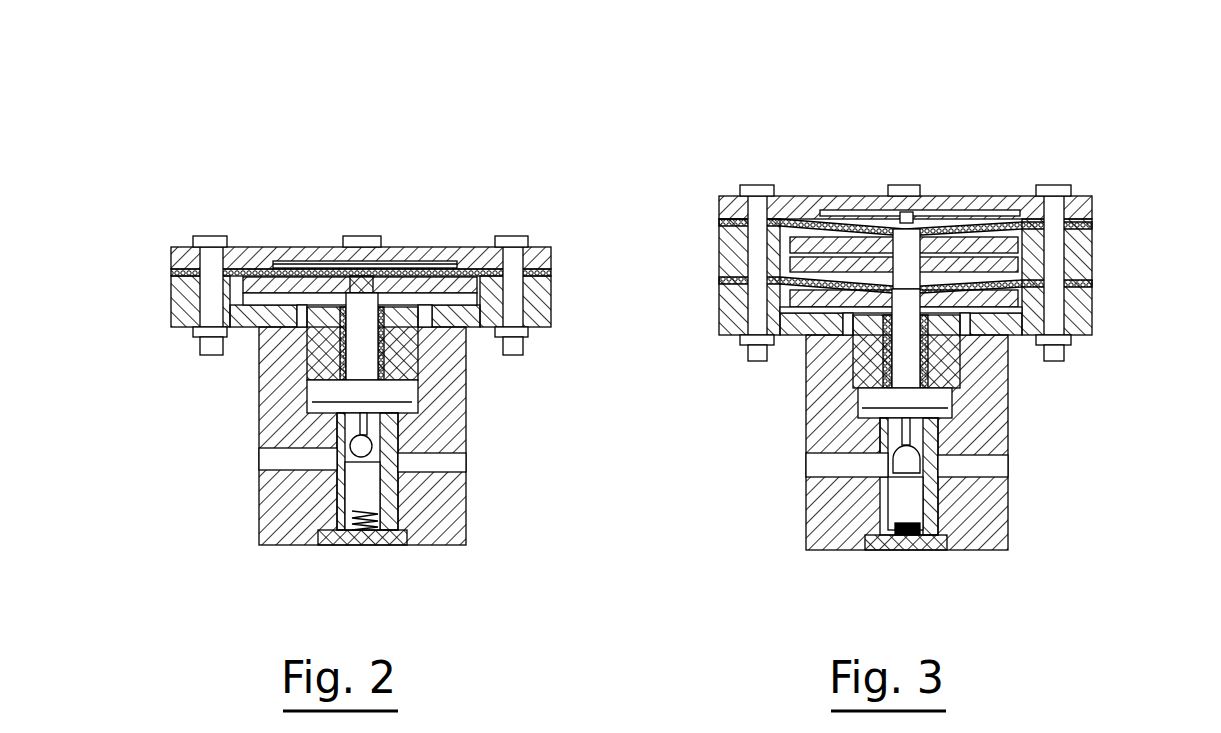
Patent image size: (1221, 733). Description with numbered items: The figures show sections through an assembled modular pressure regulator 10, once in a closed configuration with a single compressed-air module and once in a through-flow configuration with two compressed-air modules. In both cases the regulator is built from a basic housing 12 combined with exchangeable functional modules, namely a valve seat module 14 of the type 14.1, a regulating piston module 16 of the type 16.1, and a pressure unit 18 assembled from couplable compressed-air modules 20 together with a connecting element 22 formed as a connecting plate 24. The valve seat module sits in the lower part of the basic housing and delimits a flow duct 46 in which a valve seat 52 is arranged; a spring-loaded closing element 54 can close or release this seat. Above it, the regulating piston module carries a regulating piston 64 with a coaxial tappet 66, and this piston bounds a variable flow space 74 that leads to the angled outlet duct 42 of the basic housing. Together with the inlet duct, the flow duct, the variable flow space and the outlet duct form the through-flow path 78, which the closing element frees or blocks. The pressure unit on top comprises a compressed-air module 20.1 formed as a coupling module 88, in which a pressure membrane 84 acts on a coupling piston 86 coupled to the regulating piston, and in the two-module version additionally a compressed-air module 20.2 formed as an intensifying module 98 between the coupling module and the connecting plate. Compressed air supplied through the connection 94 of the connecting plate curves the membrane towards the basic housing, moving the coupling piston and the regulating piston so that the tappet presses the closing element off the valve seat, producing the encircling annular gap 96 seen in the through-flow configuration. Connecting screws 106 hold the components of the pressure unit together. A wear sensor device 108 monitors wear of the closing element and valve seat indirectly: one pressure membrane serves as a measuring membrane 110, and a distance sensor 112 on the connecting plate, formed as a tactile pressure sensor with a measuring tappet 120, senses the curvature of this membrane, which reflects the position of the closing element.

In FIG. 2, the modular pressure regulator 10 is at (387, 97).
In FIG. 3, the modular pressure regulator 10 is at (1050, 97).
In FIG. 2, the basic housing 12 is at (482, 497).
In FIG. 3, the basic housing 12 is at (1020, 520).
In FIG. 2, the valve seat module 14 is at (389, 558).
In FIG. 3, the valve seat module 14 is at (936, 563).
In FIG. 2, the valve seat module 14.1 is at (328, 548).
In FIG. 2, the regulating piston module 16 is at (294, 395).
In FIG. 3, the regulating piston module 16 is at (843, 402).
In FIG. 2, the regulating piston module 16.1 is at (404, 366).
In FIG. 2, the pressure unit 18 is at (160, 282).
In FIG. 3, the pressure unit 18 is at (705, 276).
In FIG. 2, the compressed-air module 20 is at (565, 312).
In FIG. 3, the compressed-air module 20 is at (1106, 265).
In FIG. 2, the compressed-air module 20.1 is at (171, 312).
In FIG. 3, the compressed-air module 20.1 is at (727, 335).
In FIG. 3, the compressed-air module 20.2 is at (718, 226).
In FIG. 2, the connecting element 22 is at (179, 238).
In FIG. 2, the connecting plate 24 is at (540, 252).
In FIG. 2, the outlet duct 42 is at (456, 463).
In FIG. 3, the outlet duct 42 is at (1000, 470).
In FIG. 2, the flow duct 46 is at (330, 462).
In FIG. 3, the flow duct 46 is at (880, 480).
In FIG. 2, the valve seat 52 is at (392, 440).
In FIG. 3, the valve seat 52 is at (885, 470).
In FIG. 2, the closing element 54 is at (364, 546).
In FIG. 3, the closing element 54 is at (905, 550).
In FIG. 2, the regulating piston 64 is at (309, 364).
In FIG. 3, the regulating piston 64 is at (945, 405).
In FIG. 2, the tappet 66 is at (357, 432).
In FIG. 3, the tappet 66 is at (913, 436).
In FIG. 2, the variable flow space 74 is at (400, 405).
In FIG. 3, the variable flow space 74 is at (948, 440).
In FIG. 2, the through-flow path 78 is at (280, 457).
In FIG. 3, the through-flow path 78 is at (816, 465).
In FIG. 2, the pressure membrane 84 is at (259, 272).
In FIG. 3, the pressure membrane 84 is at (818, 222).
In FIG. 2, the coupling piston 86 is at (426, 285).
In FIG. 3, the coupling piston 86 is at (1005, 240).
In FIG. 2, the coupling module 88 is at (565, 274).
In FIG. 3, the coupling module 88 is at (1106, 303).
In FIG. 2, the connection 94 is at (322, 262).
In FIG. 3, the connection 94 is at (862, 196).
In FIG. 3, the annular gap 96 is at (930, 462).
In FIG. 3, the intensifying module 98 is at (1106, 237).
In FIG. 2, the connecting screws 106 is at (511, 258).
In FIG. 3, the connecting screws 106 is at (1093, 220).
In FIG. 2, the wear sensor device 108 is at (385, 206).
In FIG. 3, the wear sensor device 108 is at (920, 190).
In FIG. 2, the measuring membrane 110 is at (245, 247).
In FIG. 3, the measuring membrane 110 is at (798, 196).
In FIG. 2, the distance sensor 112 is at (358, 226).
In FIG. 3, the distance sensor 112 is at (904, 174).
In FIG. 2, the measuring tappet 120 is at (366, 270).
In FIG. 3, the measuring tappet 120 is at (912, 240).